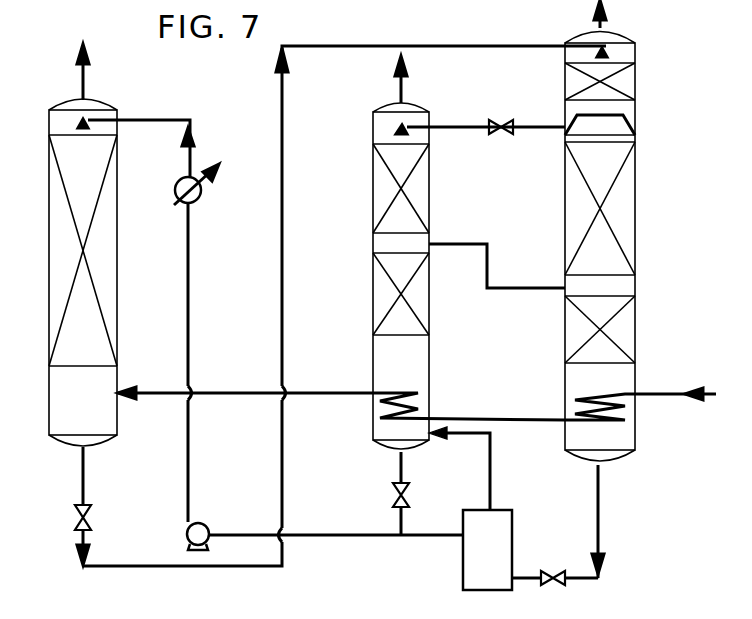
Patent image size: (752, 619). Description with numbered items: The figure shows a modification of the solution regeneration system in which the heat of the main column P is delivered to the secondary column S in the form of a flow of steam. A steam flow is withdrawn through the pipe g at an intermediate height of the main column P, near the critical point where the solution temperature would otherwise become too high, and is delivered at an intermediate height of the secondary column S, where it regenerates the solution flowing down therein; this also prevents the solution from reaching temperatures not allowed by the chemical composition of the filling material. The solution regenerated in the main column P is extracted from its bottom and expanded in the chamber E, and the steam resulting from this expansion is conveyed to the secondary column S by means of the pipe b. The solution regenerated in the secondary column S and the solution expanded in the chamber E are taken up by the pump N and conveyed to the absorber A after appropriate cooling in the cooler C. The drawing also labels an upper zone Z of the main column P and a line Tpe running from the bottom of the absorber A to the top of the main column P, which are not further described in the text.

The absorber A is at (110, 304).
The cooler C is at (196, 336).
The pump N is at (312, 536).
The secondary column S is at (457, 295).
The pipe g is at (497, 266).
The pipe b is at (468, 468).
The chamber E is at (517, 550).
The zone Z is at (612, 99).
The main column P is at (611, 289).
The recycle line Tpe is at (399, 295).